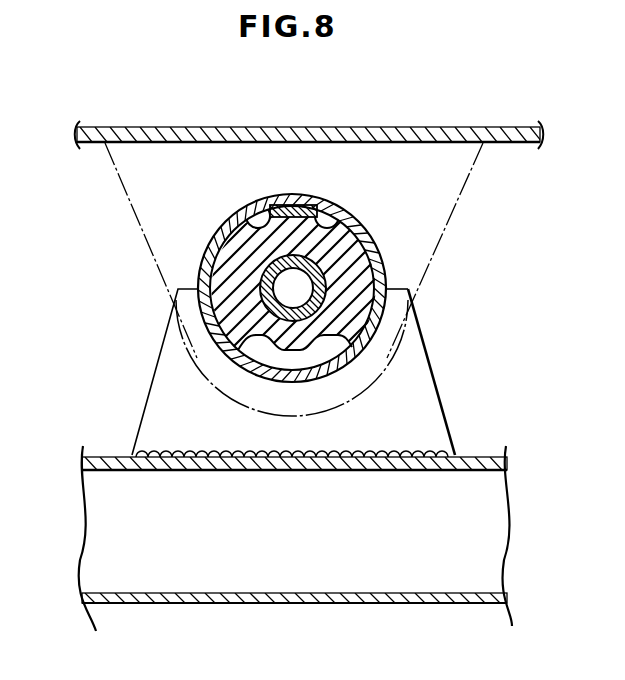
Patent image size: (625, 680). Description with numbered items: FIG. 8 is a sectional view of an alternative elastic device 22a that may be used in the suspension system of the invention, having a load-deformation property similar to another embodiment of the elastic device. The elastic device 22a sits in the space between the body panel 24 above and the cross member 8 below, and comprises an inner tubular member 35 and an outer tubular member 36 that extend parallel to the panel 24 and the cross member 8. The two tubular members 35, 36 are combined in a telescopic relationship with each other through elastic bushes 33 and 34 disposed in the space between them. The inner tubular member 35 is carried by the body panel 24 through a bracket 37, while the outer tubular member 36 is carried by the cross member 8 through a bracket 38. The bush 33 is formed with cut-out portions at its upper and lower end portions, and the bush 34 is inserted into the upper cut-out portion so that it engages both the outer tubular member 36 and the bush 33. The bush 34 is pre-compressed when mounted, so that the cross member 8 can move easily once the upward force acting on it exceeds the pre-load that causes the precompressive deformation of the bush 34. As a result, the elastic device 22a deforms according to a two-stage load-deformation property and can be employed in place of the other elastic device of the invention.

The cross member 8 is at (176, 586).
The elastic device 22a is at (396, 328).
The body panel 24 is at (133, 127).
The elastic bush 33 is at (357, 237).
The elastic bush 34 is at (289, 207).
The inner tubular member 35 is at (210, 322).
The outer tubular member 36 is at (383, 282).
The bracket 37 is at (153, 262).
The bracket 38 is at (430, 382).